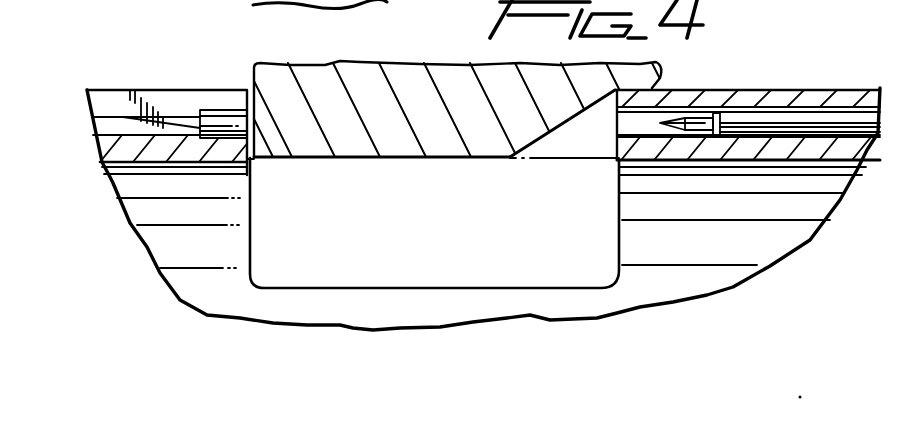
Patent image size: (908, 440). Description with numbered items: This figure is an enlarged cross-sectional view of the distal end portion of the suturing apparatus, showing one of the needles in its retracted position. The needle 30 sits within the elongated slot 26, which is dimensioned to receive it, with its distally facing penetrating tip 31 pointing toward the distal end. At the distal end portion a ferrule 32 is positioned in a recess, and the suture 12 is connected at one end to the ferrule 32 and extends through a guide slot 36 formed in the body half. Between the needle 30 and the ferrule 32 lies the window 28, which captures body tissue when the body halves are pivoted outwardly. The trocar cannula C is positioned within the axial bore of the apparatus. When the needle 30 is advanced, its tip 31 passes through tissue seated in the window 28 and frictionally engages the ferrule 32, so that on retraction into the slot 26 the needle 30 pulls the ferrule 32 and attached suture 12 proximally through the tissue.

The suture 12 is at (103, 119).
The guide slot 36 is at (113, 128).
The ferrule 32 is at (217, 120).
The elongated slot 26 is at (642, 126).
The penetrating tip 31 is at (702, 121).
The needle 30 is at (828, 117).
The window 28 is at (578, 127).
The trocar cannula C is at (298, 238).